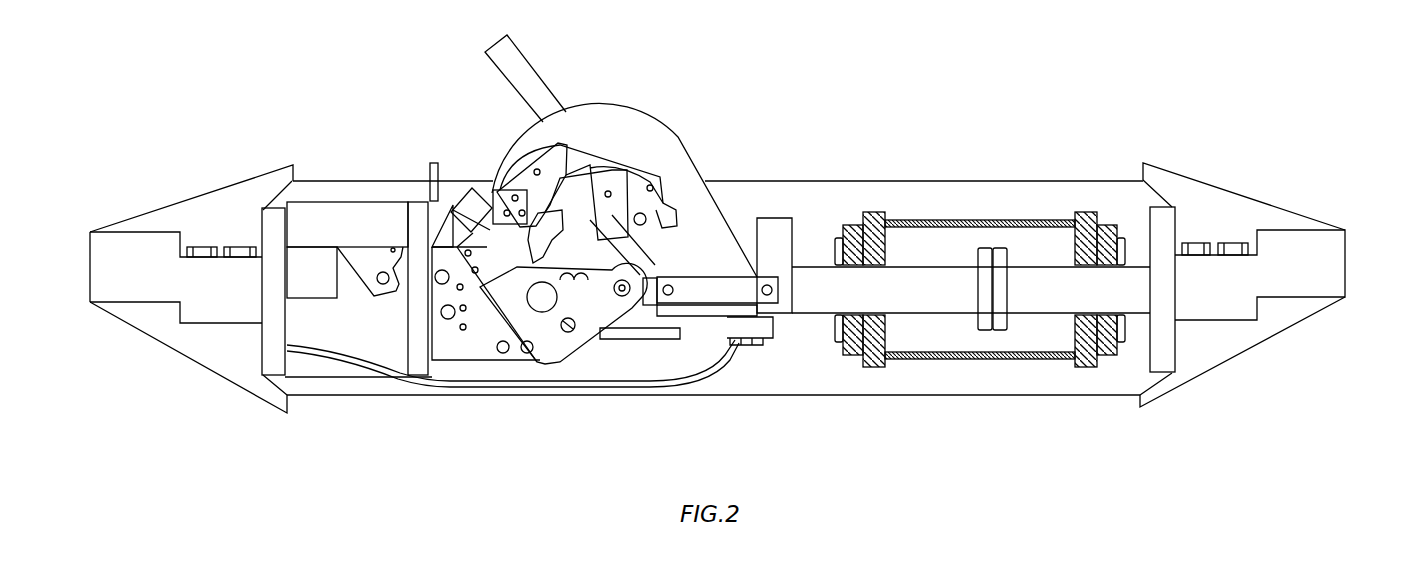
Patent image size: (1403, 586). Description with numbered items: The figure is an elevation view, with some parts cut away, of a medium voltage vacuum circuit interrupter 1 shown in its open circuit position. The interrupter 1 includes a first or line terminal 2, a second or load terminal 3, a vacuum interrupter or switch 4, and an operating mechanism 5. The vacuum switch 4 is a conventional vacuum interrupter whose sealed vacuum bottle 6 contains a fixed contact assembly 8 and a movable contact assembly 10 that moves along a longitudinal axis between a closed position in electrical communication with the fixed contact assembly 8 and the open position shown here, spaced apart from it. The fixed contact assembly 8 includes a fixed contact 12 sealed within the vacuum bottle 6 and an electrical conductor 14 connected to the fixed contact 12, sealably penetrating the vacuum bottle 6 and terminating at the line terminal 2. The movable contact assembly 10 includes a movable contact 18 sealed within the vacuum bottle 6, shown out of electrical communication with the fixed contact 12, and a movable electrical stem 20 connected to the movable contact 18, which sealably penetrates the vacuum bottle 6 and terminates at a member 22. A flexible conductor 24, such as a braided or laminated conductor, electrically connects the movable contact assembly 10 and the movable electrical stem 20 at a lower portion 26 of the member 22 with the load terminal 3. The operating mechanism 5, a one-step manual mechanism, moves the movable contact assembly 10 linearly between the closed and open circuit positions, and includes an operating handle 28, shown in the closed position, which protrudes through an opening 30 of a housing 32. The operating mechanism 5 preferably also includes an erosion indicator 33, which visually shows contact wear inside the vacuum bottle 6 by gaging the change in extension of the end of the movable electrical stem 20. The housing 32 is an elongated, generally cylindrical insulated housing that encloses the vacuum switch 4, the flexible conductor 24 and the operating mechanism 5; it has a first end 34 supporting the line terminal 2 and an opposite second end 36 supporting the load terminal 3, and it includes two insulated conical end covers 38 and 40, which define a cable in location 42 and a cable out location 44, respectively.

The medium voltage vacuum circuit interrupter 1 is at (1377, 334).
The line terminal 2 is at (1162, 213).
The load terminal 3 is at (273, 235).
The vacuum interrupter 4 is at (992, 380).
The operating mechanism 5 is at (557, 416).
The vacuum bottle 6 is at (920, 363).
The fixed contact assembly 8 is at (1031, 256).
The movable contact assembly 10 is at (946, 256).
The fixed contact 12 is at (1003, 320).
The electrical conductor 14 is at (1140, 253).
The movable contact 18 is at (985, 322).
The movable electrical stem 20 is at (809, 307).
The member 22 is at (773, 217).
The flexible conductor 24 is at (493, 394).
The lower portion 26 is at (766, 353).
The operating handle 28 is at (520, 68).
The opening 30 is at (705, 178).
The housing 32 is at (878, 170).
The erosion indicator 33 is at (427, 163).
The first end 34 is at (1249, 404).
The second end 36 is at (202, 406).
The insulated conical end cover 38 is at (1248, 196).
The insulated conical end cover 40 is at (193, 196).
The cable in location 42 is at (1371, 250).
The cable out location 44 is at (76, 254).